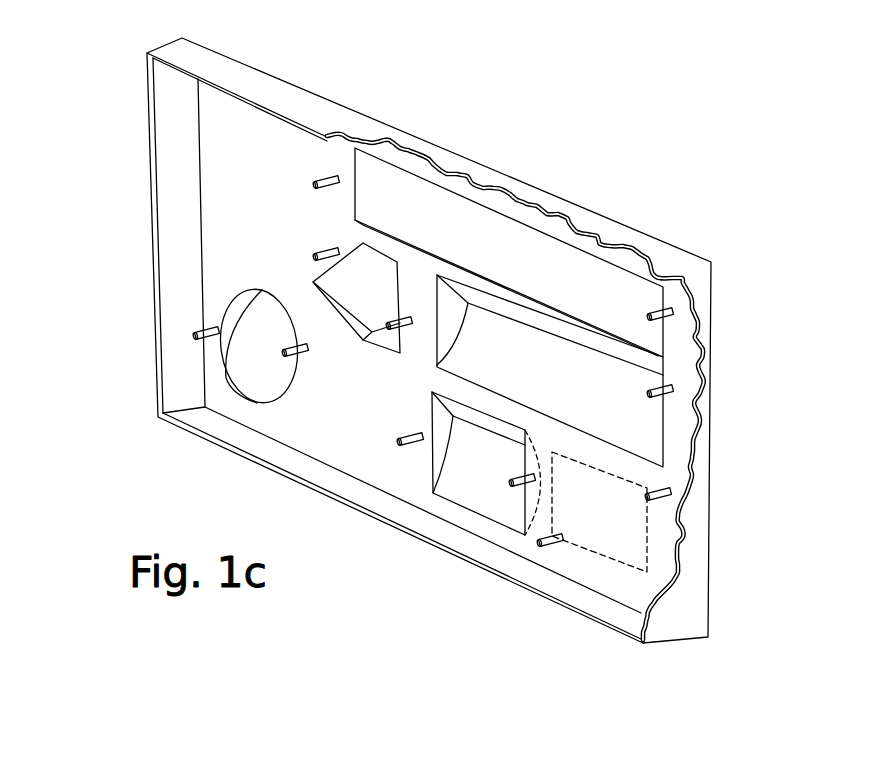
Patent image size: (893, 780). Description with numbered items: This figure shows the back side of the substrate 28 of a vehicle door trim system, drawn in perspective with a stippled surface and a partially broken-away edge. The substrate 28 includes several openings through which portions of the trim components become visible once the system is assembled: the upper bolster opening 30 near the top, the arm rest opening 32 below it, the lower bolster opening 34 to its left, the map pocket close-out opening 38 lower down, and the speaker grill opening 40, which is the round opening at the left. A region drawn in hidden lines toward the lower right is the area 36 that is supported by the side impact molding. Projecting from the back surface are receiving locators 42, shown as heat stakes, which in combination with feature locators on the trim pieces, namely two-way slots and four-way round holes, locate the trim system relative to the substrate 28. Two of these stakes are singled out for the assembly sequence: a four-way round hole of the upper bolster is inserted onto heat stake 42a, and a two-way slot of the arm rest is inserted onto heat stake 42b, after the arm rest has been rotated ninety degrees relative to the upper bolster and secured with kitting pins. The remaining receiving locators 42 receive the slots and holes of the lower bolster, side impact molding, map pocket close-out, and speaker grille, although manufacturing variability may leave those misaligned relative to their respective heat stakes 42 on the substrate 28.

The substrate 28 is at (638, 158).
The upper bolster opening 30 is at (473, 232).
The arm rest opening 32 is at (568, 336).
The lower bolster opening 34 is at (365, 283).
The area supported by side impact molding 36 is at (587, 532).
The map pocket close-out opening 38 is at (475, 420).
The speaker grill opening 40 is at (260, 345).
The receiving locators 42 is at (200, 334).
The heat stake 42a is at (327, 175).
The heat stake 42b is at (666, 308).